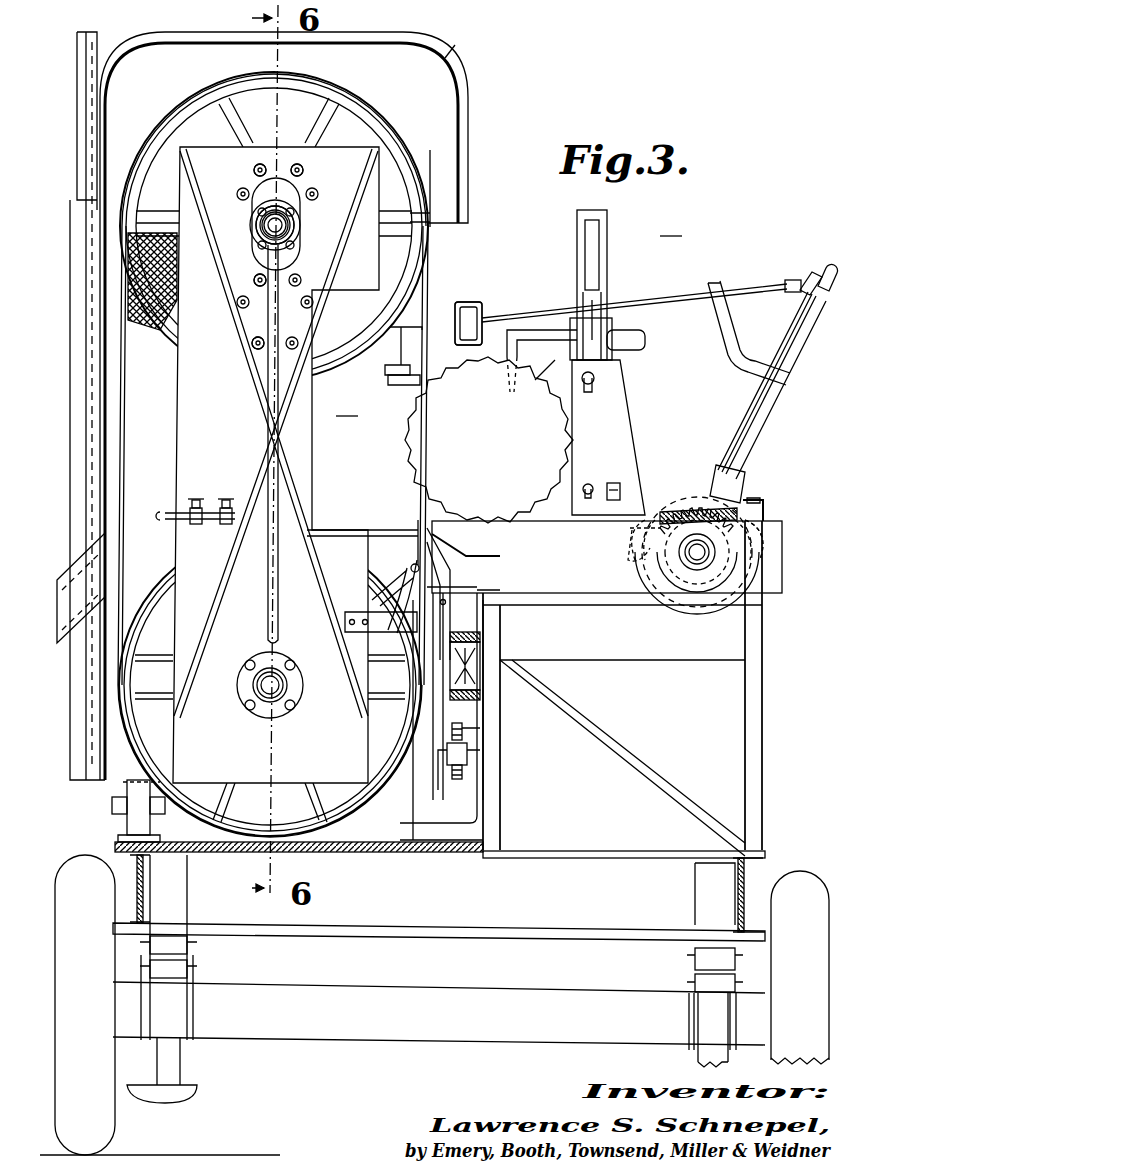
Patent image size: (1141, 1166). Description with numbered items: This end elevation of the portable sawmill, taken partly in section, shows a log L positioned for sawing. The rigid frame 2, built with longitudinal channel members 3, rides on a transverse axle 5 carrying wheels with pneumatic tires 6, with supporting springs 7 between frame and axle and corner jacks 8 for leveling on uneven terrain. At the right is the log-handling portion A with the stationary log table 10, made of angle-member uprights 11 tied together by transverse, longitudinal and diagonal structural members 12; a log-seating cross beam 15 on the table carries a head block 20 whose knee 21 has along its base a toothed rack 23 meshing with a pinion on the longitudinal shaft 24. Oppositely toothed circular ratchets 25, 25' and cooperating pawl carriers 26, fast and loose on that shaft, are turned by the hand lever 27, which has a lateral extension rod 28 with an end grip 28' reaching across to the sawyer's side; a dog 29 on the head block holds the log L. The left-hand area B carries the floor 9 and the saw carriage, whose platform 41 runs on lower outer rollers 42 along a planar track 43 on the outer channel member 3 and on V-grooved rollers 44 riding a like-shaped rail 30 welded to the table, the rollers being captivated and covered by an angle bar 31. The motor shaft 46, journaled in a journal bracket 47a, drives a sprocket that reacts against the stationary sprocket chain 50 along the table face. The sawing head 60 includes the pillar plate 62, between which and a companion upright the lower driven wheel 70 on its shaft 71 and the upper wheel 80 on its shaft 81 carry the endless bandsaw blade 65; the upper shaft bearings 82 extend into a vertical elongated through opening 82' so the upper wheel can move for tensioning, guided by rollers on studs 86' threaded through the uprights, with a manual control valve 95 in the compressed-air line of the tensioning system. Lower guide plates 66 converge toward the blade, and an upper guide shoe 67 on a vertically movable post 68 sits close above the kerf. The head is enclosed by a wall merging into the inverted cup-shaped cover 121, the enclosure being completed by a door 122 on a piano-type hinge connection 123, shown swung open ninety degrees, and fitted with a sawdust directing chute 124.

The rigid frame 2 is at (368, 931).
The longitudinal channel members 3 is at (140, 866).
The transverse axle 5 is at (505, 997).
The pneumatic tires 6 is at (105, 1130).
The supporting springs 7 is at (190, 966).
The jacks 8 is at (180, 1062).
The floor 9 is at (345, 852).
The log table 10 is at (675, 702).
The angle-member uprights 11 is at (505, 800).
The structural members 12 is at (650, 775).
The log-seating cross beams 15 is at (533, 531).
The head blocks 20 is at (657, 396).
The knee 21 is at (626, 427).
The toothed rack 23 is at (733, 510).
The longitudinal shaft 24 is at (690, 562).
The circular ratchet 25 is at (678, 555).
The circular ratchet 25' is at (776, 557).
The pawl carriers 26 is at (640, 528).
The hand lever 27 is at (790, 362).
The lateral extension rod 28 is at (641, 293).
The end grip 28' is at (473, 305).
The dogs 29 is at (522, 330).
The rail 30 is at (472, 692).
The angle bar 31 is at (470, 625).
The platform 41 is at (405, 810).
The lower outer rollers 42 is at (127, 818).
The planar track 43 is at (118, 838).
The V-grooved rollers 44 is at (470, 656).
The motor shaft 46 is at (470, 757).
The journal bracket 47a is at (465, 784).
The stationary sprocket chain 50 is at (466, 732).
The sawing head 60 is at (470, 96).
The upright 62 is at (297, 452).
The endless bandsaw blade 65 is at (124, 405).
The lower saw guide plates 66 is at (415, 570).
The upper guide shoe 67 is at (400, 383).
The vertical movable post 68 is at (388, 350).
The lower bandsaw wheel 70 is at (153, 600).
The lower wheel shaft 71 is at (284, 687).
The upper bandsaw wheel 80 is at (318, 93).
The upper wheel shaft 81 is at (283, 226).
The bearings 82 is at (253, 228).
The vertical elongated through opening 82' is at (294, 236).
The studs 86' is at (254, 251).
The manual control valve 95 is at (196, 524).
The inverted cup-shaped cover 121 is at (467, 49).
The door 122 is at (92, 50).
The piano-type hinge connection 123 is at (92, 352).
The sawdust directing chute 124 is at (100, 585).
The log-handling portion A is at (671, 224).
The carriage travel area B is at (347, 404).
The log L is at (489, 436).